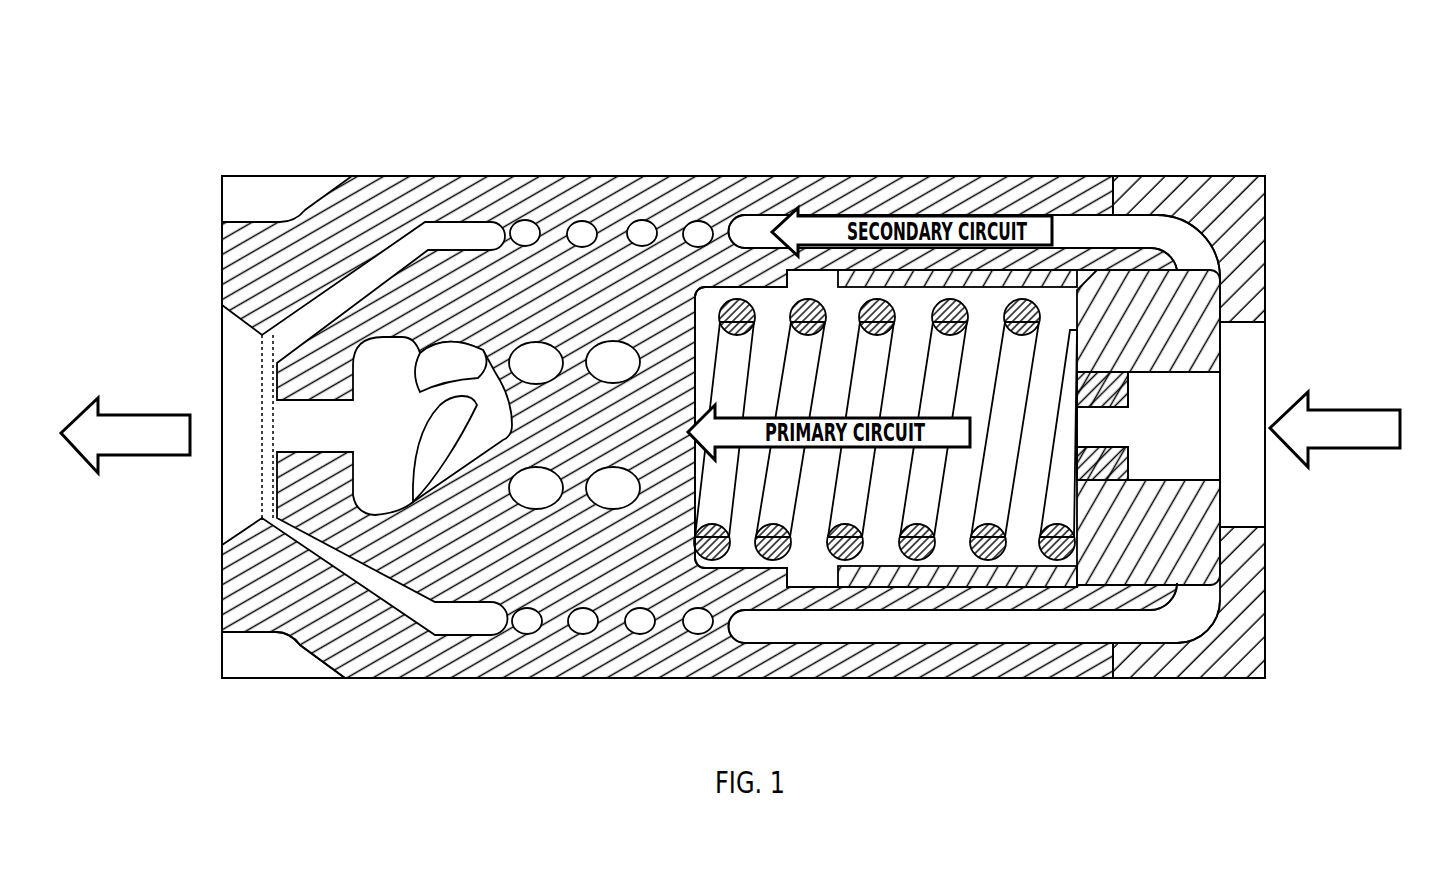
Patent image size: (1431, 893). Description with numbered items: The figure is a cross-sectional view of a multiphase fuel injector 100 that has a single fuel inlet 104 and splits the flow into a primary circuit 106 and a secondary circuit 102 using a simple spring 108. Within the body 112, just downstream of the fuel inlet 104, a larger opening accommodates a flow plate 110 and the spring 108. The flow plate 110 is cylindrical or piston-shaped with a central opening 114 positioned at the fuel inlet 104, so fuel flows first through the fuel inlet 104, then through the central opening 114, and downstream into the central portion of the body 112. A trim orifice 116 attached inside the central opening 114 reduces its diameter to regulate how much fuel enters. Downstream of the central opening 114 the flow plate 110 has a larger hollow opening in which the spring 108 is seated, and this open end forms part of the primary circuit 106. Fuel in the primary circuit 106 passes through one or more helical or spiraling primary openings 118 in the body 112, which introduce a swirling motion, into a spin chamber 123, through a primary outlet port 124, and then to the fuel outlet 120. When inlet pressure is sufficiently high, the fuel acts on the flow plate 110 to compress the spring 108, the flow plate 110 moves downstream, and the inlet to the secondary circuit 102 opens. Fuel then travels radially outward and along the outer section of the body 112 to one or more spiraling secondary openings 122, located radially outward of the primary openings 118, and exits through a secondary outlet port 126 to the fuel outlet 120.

The multiphase fuel injector 100 is at (978, 68).
The secondary circuit 102 is at (903, 215).
The fuel inlet 104 is at (1348, 450).
The primary circuit 106 is at (733, 568).
The spring 108 is at (845, 555).
The flow plate 110 is at (1190, 562).
The body 112 is at (643, 175).
The central opening 114 is at (1196, 409).
The trim orifice 116 is at (1120, 478).
The primary openings 118 is at (516, 512).
The fuel outlet 120 is at (138, 456).
The secondary openings 122 is at (582, 634).
The spin chamber 123 is at (568, 400).
The primary outlet port 124 is at (315, 452).
The secondary outlet port 126 is at (305, 542).